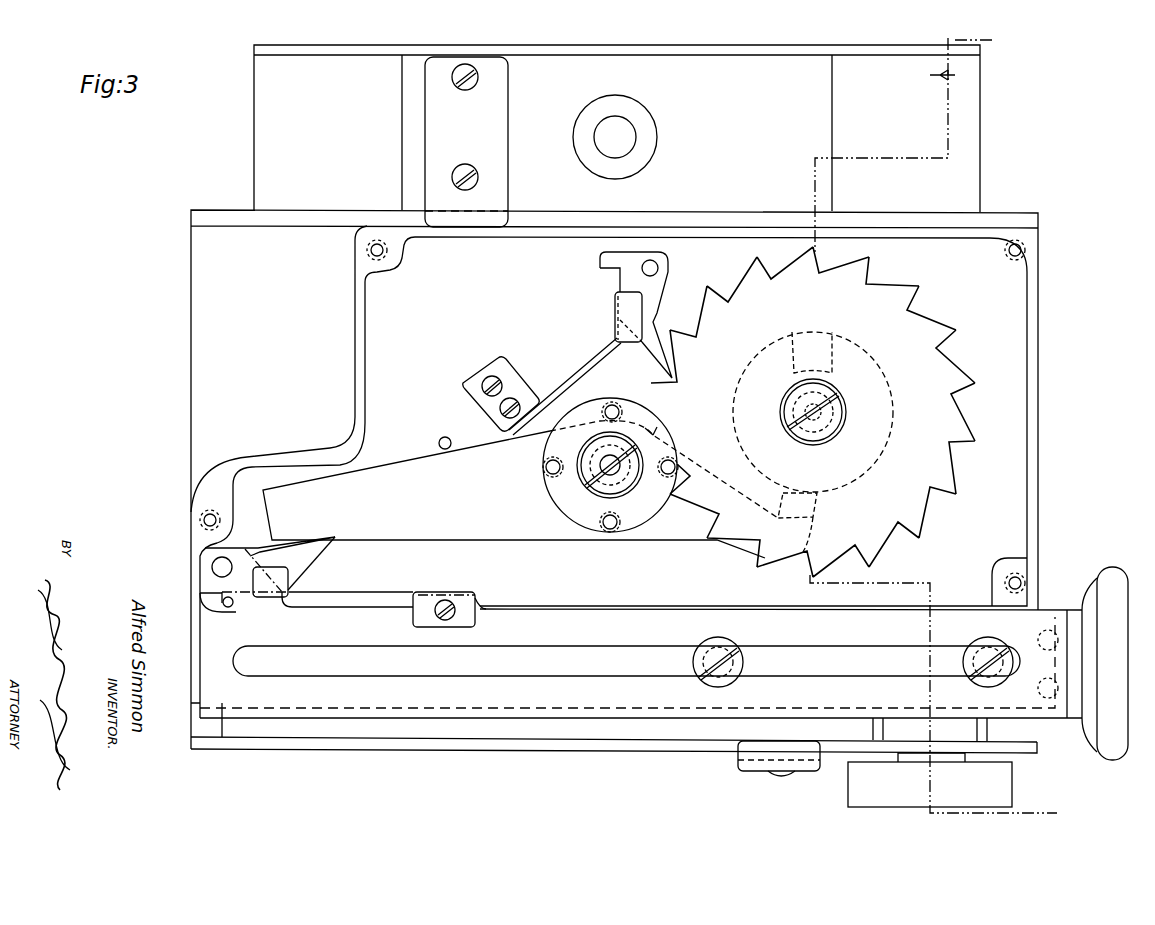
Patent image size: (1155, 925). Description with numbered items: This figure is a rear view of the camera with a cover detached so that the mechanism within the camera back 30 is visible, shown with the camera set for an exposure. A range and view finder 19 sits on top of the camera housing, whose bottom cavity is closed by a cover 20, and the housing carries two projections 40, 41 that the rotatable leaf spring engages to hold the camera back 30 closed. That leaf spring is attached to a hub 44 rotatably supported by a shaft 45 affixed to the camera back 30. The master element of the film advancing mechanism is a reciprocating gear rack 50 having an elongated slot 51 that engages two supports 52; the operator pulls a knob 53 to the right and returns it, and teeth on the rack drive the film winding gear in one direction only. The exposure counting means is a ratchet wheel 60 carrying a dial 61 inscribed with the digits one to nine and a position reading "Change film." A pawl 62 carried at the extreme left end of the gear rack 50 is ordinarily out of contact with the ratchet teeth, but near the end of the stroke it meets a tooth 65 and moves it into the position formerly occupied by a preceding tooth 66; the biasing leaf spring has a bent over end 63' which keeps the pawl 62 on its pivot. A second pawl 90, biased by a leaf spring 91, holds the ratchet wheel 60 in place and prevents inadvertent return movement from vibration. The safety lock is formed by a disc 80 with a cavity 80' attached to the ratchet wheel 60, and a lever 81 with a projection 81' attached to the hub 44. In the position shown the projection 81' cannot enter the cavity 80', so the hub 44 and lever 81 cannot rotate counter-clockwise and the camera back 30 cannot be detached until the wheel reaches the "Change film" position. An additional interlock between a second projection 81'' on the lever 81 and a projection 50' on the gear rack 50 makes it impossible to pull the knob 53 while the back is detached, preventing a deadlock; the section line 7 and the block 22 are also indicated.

The section line 7- 7 is at (942, 430).
The range and view finder 19 is at (733, 55).
The cover 20 is at (440, 750).
The support block 22 is at (848, 784).
The camera back 30 is at (1044, 342).
The projection 40 is at (498, 199).
The projection 41 is at (740, 762).
The hub 44 is at (546, 453).
The shaft 45 is at (592, 451).
The gear rack 50 is at (641, 670).
The projection 50' is at (270, 556).
The elongated slot 51 is at (626, 661).
The supports 52 is at (962, 660).
The knob 53 is at (1110, 578).
The ratchet wheel 60 is at (952, 331).
The dial 61 is at (930, 368).
The pawl 62 is at (318, 553).
The bent over end 63' is at (296, 582).
The tooth 65 is at (750, 554).
The preceding tooth 66 is at (808, 560).
The disc 80 is at (808, 412).
The cavity 80' is at (812, 352).
The lever 81 is at (520, 489).
The projection 81' is at (797, 522).
The second projection 81'' is at (285, 507).
The second pawl 90 is at (664, 284).
The leaf spring 91 is at (588, 364).